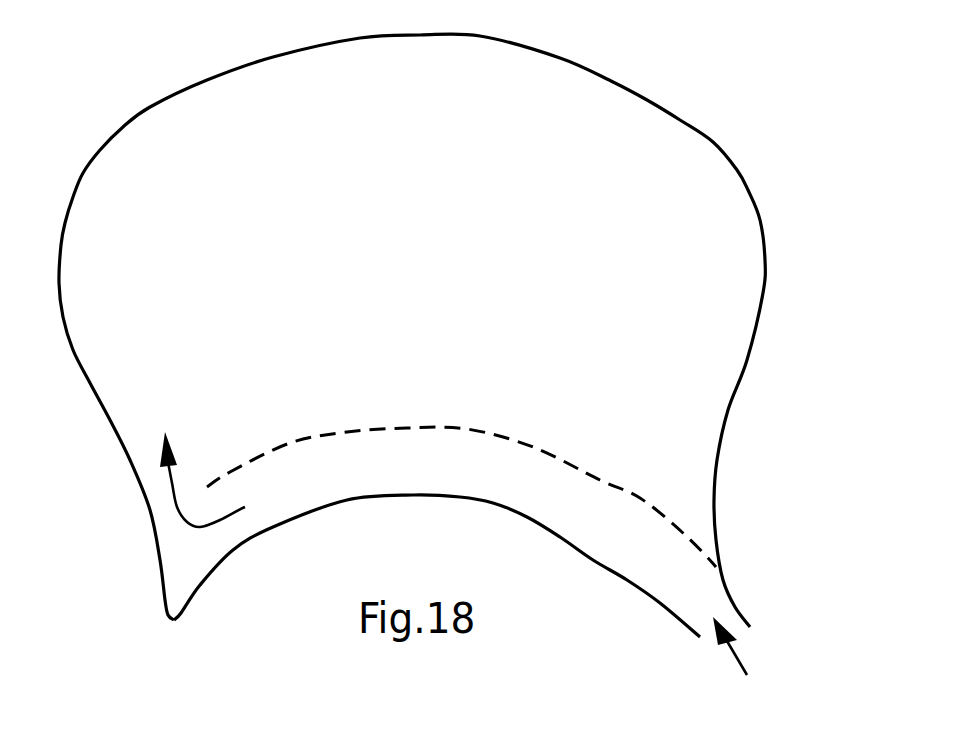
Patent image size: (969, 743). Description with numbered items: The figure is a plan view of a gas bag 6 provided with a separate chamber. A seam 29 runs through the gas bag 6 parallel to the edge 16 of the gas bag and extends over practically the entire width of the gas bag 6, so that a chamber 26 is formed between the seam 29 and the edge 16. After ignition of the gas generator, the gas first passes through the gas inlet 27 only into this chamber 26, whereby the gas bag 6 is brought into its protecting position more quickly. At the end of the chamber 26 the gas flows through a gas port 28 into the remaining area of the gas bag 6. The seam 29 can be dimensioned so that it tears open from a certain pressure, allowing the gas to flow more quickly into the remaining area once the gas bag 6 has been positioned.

The gas bag 6 is at (705, 205).
The edge of the gas bag 16 is at (275, 528).
The chamber 26 is at (657, 552).
The gas inlet 27 is at (732, 617).
The gas port 28 is at (165, 497).
The seam 29 is at (635, 497).